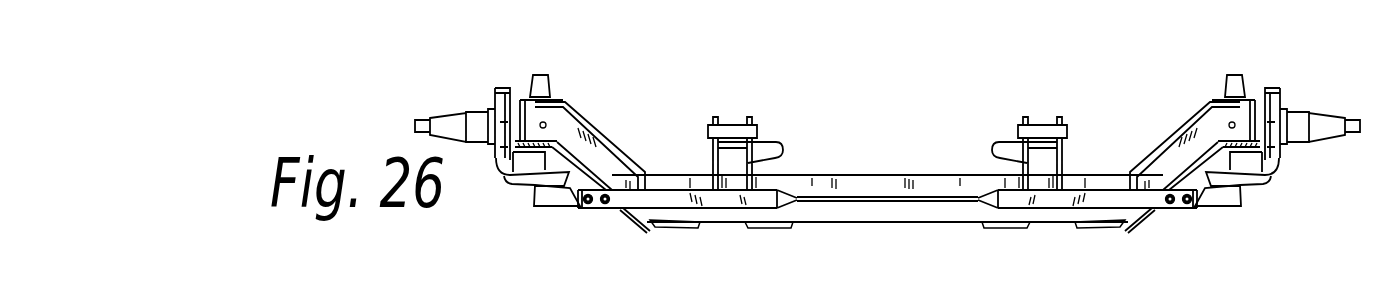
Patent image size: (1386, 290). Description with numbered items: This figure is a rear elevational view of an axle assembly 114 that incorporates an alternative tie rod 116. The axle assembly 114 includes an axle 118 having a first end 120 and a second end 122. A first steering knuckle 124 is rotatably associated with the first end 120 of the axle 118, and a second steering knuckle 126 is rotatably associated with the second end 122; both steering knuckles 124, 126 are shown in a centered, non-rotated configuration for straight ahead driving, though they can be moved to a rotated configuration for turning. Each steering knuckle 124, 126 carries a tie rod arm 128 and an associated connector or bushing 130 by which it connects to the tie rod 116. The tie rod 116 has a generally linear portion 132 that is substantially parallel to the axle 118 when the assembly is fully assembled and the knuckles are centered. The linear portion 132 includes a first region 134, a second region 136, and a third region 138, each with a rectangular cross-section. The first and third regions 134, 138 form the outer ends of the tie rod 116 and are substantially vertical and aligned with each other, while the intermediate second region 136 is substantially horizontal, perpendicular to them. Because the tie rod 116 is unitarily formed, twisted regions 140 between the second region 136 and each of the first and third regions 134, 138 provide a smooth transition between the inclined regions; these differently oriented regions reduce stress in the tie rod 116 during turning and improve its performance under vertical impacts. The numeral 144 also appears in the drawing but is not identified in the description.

The axle assembly 114 is at (912, 192).
The tie rod 116 is at (964, 178).
The axle 118 is at (841, 182).
The first end 120 is at (572, 104).
The second end 122 is at (1210, 103).
The first steering knuckle 124 is at (495, 100).
The second steering knuckle 126 is at (1280, 100).
The tie rod arm 128 is at (528, 175).
The bushing 130 is at (558, 193).
The linear portion 132 is at (1163, 224).
The first region 134 is at (667, 207).
The second region 136 is at (867, 202).
The third region 138 is at (1040, 200).
The twisted regions 140 is at (790, 205).
The fastener 144 is at (816, 286).